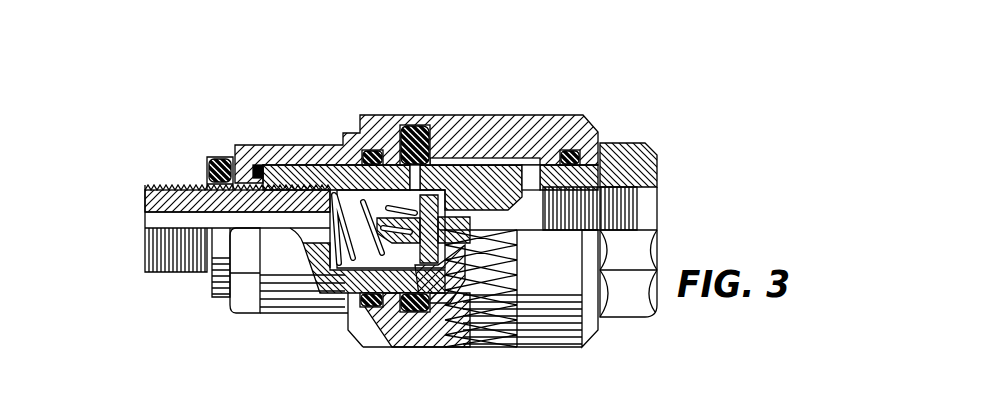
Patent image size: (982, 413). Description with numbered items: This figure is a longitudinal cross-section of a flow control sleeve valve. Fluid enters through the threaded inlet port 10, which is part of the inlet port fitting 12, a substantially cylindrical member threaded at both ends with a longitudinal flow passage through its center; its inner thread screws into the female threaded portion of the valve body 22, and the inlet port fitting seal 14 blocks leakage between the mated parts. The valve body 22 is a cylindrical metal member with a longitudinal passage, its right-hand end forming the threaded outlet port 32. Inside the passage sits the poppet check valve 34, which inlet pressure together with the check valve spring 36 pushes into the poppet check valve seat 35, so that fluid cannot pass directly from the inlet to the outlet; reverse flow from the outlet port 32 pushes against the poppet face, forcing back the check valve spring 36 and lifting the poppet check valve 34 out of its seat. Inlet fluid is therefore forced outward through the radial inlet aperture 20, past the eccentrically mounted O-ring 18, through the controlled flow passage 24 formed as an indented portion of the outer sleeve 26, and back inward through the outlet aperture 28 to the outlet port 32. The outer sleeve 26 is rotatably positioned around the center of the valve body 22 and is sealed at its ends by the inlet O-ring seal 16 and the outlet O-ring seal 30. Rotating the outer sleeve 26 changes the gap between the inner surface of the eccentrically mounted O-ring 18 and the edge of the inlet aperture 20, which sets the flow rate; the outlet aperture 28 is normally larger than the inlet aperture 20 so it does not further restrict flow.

The inlet port 10 is at (166, 221).
The inlet port fitting 12 is at (218, 157).
The inlet port fitting seal 14 is at (258, 171).
The inlet O-ring seal 16 is at (370, 155).
The eccentrically mounted O-ring 18 is at (425, 125).
The inlet aperture 20 is at (418, 176).
The valve body 22 is at (452, 172).
The controlled flow passage 24 is at (475, 161).
The outer sleeve 26 is at (600, 133).
The outlet aperture 28 is at (532, 172).
The outlet O-ring seal 30 is at (580, 160).
The outlet port 32 is at (641, 221).
The poppet check valve 34 is at (421, 207).
The poppet check valve seat 35 is at (427, 382).
The check valve spring 36 is at (343, 269).